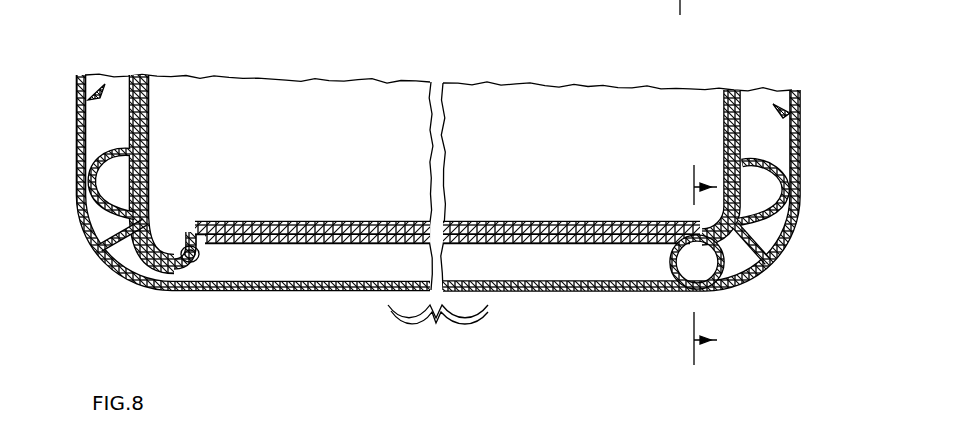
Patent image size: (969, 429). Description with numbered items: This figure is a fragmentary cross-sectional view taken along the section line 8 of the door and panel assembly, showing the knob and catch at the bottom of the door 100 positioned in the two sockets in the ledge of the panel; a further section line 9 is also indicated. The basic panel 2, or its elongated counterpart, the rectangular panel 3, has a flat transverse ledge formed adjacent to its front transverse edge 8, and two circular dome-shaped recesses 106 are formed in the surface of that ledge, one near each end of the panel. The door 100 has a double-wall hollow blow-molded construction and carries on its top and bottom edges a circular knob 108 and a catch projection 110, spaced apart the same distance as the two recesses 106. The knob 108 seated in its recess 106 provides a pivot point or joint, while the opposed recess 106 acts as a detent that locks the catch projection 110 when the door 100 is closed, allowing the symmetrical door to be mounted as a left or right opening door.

The panel 2 is at (330, 292).
The elongated rectangular panel 3 is at (103, 85).
The front transverse edge 8 is at (664, 9).
The section line 9 is at (695, 265).
The door 100 is at (307, 221).
The circular dome-shaped recess 106 is at (107, 175).
The circular knob 108 is at (193, 258).
The catch projection 110 is at (662, 280).